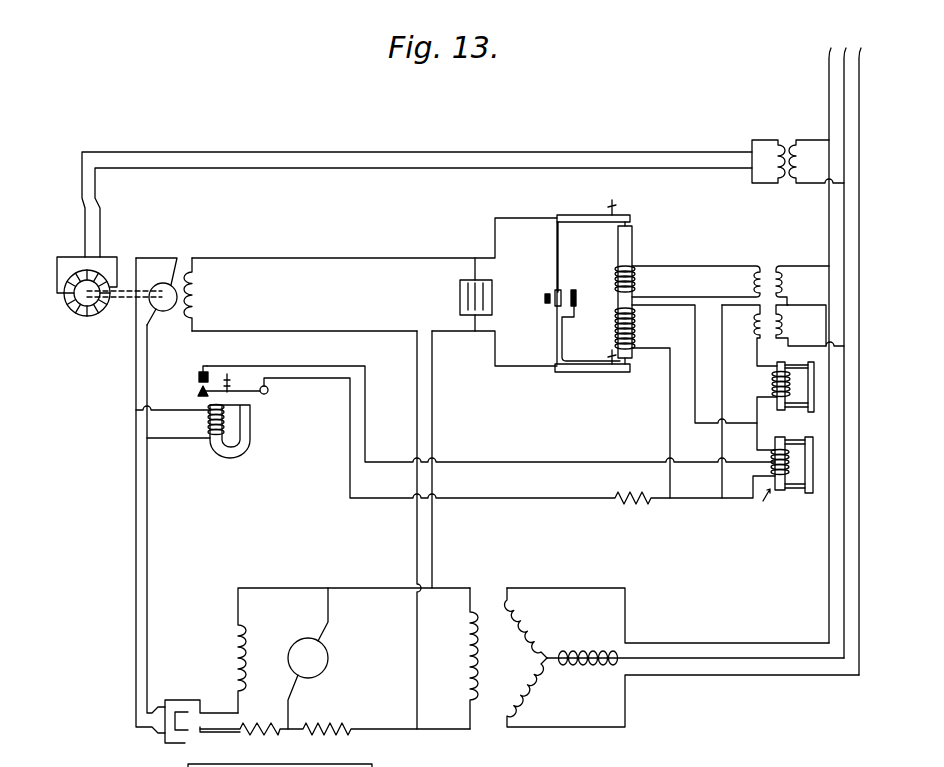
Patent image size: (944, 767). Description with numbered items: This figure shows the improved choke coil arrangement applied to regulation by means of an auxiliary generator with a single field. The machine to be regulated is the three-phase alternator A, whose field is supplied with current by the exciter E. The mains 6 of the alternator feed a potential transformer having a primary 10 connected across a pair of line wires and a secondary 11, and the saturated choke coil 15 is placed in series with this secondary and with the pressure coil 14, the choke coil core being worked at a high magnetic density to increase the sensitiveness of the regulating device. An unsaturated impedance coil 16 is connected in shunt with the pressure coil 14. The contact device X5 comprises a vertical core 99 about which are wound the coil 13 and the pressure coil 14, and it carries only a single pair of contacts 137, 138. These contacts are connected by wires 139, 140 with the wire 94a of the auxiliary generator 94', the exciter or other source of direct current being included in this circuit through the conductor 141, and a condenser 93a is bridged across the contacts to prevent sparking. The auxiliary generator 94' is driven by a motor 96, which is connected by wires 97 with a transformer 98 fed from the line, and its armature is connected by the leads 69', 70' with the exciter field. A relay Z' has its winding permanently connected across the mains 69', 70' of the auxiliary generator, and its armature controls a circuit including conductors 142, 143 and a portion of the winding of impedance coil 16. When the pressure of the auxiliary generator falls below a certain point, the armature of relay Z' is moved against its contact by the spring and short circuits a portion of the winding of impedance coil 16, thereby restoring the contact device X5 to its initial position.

The mains 6 is at (845, 351).
The wires 97 is at (362, 168).
The transformer 98 is at (785, 140).
The motor 96 is at (68, 312).
The auxiliary generator 94' is at (163, 307).
The wire of the auxiliary generator 94a is at (200, 300).
The wire 139 is at (369, 258).
The wire 140 is at (351, 332).
The conductor 141 is at (432, 413).
The conductor 142 is at (526, 498).
The conductor 143 is at (512, 462).
The condenser 93a is at (456, 294).
The contact device X5 is at (592, 286).
The vertical core 99 is at (631, 239).
The contact 137 is at (556, 294).
The contact 138 is at (576, 298).
The coil 13 is at (631, 281).
The pressure coil 14 is at (632, 325).
The secondary of potential transformer 11 is at (757, 330).
The primary of potential transformer 10 is at (783, 322).
The saturated choke coil 15 is at (776, 381).
The unsaturated impedance coil 16 is at (787, 446).
The relay Z' is at (211, 412).
The main of auxiliary generator 69' is at (122, 495).
The main of auxiliary generator 70' is at (170, 519).
The exciter E is at (339, 661).
The alternator A is at (675, 657).